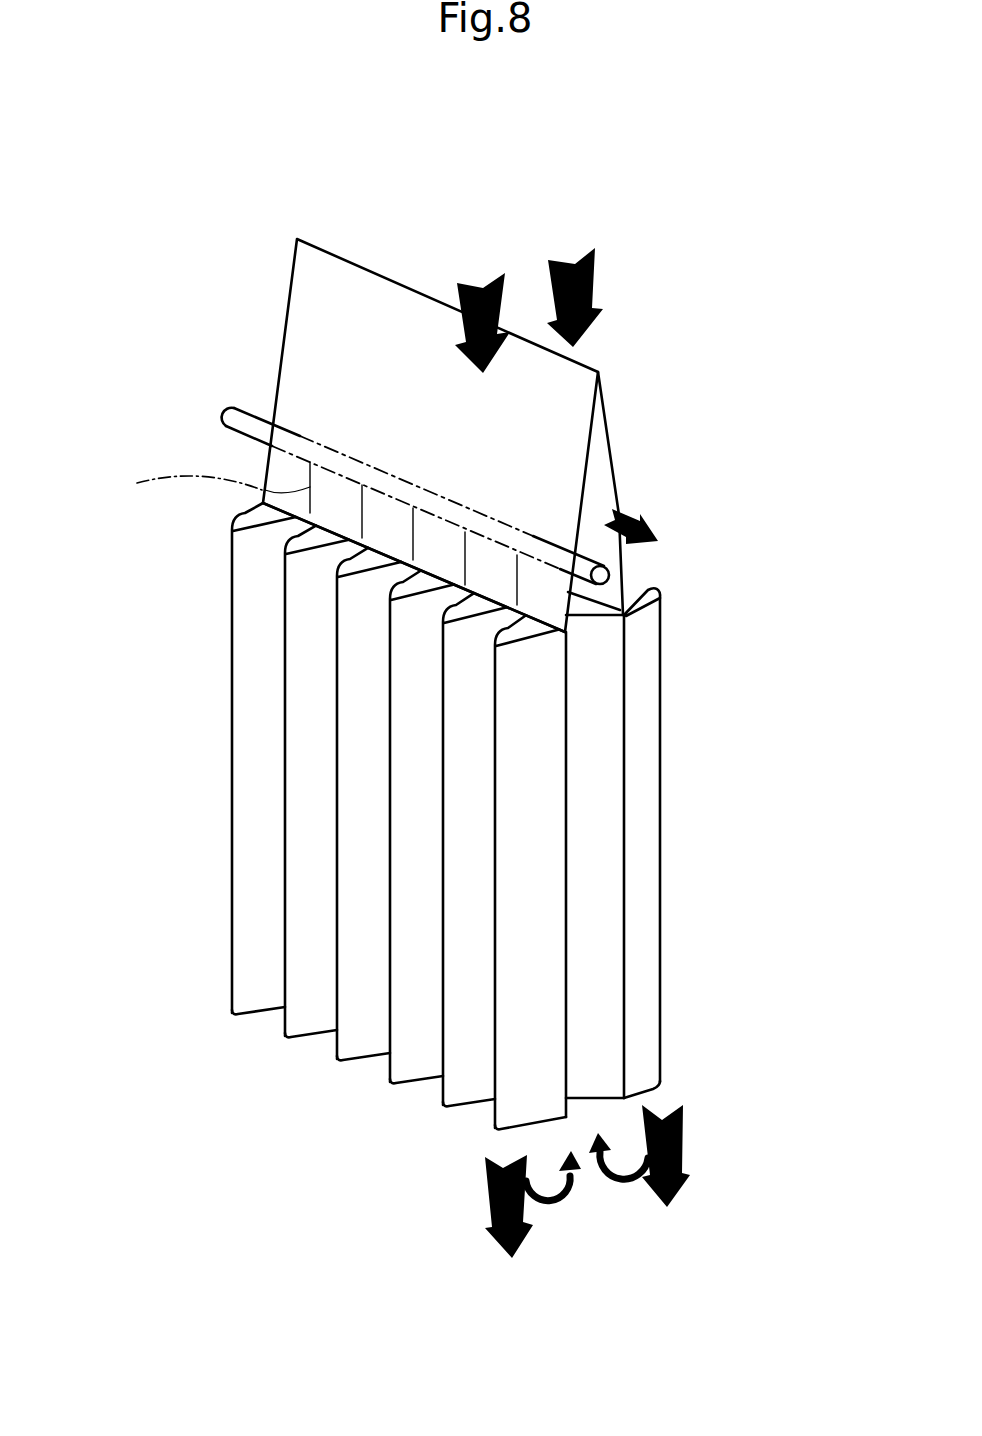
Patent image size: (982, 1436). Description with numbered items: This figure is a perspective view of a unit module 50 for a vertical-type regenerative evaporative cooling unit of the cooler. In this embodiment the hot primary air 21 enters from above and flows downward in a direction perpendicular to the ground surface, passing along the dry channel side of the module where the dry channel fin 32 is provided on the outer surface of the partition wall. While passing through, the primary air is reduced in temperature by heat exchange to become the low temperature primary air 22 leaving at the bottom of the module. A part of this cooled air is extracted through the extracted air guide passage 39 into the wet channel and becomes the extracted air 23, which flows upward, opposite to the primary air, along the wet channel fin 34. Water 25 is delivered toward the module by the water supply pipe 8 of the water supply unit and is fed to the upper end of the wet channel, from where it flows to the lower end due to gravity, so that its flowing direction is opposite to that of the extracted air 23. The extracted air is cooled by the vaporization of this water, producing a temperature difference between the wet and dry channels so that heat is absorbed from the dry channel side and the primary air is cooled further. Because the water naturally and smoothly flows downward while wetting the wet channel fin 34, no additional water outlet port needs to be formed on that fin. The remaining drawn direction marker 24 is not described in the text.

The unit module 50 is at (669, 334).
The extracted air guide passage 39 is at (307, 335).
The water supply pipe 8 is at (223, 427).
The water 25 is at (202, 484).
The dry channel fin 32 is at (234, 613).
The wet channel fin 34 is at (610, 660).
The primary air 21 is at (477, 283).
The lateral pushing direction 24 is at (640, 513).
The low temperature primary air 22 is at (488, 1192).
The extracted air 23 is at (607, 1172).